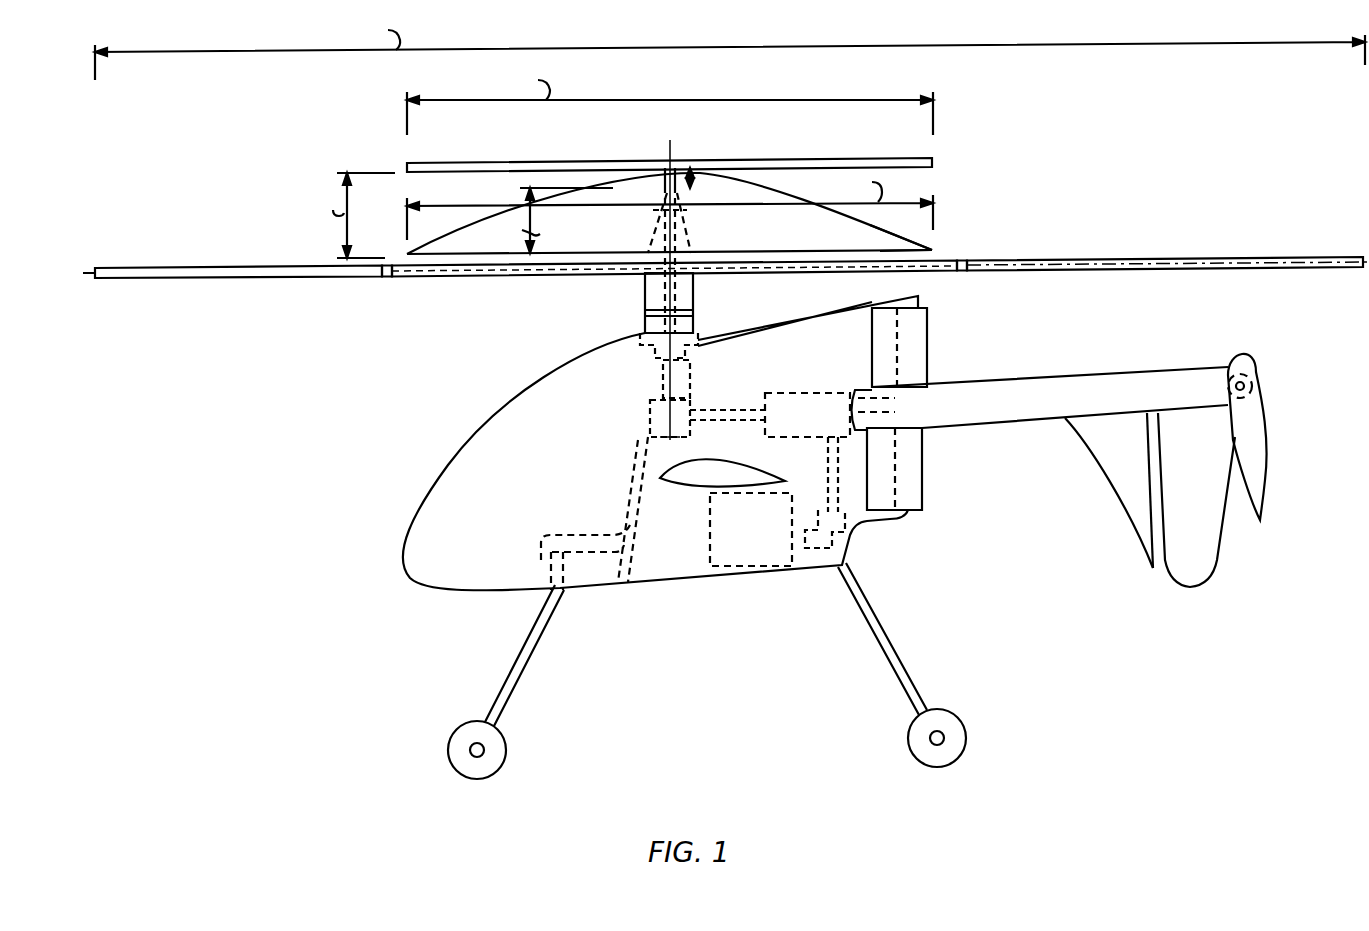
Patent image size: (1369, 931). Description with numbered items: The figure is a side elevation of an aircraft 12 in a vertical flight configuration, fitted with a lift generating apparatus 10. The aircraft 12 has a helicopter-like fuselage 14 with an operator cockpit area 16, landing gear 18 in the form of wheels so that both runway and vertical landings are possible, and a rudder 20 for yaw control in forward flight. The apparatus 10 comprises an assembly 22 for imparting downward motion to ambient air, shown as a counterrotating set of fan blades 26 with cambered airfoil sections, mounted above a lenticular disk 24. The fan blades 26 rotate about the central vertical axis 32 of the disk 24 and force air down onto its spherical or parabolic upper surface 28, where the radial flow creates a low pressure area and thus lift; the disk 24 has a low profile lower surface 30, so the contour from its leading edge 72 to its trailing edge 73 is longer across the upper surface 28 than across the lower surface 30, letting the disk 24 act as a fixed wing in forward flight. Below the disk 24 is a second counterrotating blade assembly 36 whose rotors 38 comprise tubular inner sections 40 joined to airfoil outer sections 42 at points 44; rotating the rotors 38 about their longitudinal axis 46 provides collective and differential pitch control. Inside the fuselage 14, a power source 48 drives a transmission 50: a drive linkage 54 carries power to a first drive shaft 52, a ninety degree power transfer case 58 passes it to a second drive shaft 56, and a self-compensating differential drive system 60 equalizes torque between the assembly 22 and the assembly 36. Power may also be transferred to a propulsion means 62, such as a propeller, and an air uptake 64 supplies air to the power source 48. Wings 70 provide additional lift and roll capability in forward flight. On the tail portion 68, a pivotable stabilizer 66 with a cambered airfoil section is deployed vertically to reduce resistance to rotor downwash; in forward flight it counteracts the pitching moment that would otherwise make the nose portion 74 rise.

The lift generating apparatus 10 is at (326, 378).
The aircraft 12 is at (346, 444).
The fuselage 14 is at (653, 590).
The operator cockpit area 16 is at (510, 497).
The landing gear 18 is at (486, 652).
The rudder 20 is at (1185, 588).
The assembly for imparting downward motion to ambient air 22 is at (725, 156).
The disk 24 is at (937, 246).
The fan blades 26 is at (470, 162).
The upper surface 28 is at (870, 224).
The lower surface 30 is at (470, 262).
The central vertical axis 32 is at (670, 158).
The second counterrotating blade assembly 36 is at (744, 272).
The rotors 38 is at (233, 250).
The inner sections 40 is at (883, 272).
The outer sections 42 is at (222, 280).
The points 44 is at (382, 278).
The longitudinal axis 46 is at (1238, 258).
The power source 48 is at (710, 522).
The transmission 50 is at (778, 370).
The first drive shaft 52 is at (828, 470).
The drive linkage 54 is at (722, 392).
The second drive shaft 56 is at (678, 372).
The 90° power transfer case 58 is at (650, 400).
The self-compensating differential drive system 60 is at (640, 348).
The propulsion means 62 is at (898, 357).
The air uptake 64 is at (818, 378).
The pivotable stabilizer 66 is at (1270, 458).
The tail portion 68 is at (1237, 348).
The wings 70 is at (704, 461).
The leading edge 72 is at (430, 234).
The trailing edge 73 is at (938, 251).
The nose portion 74 is at (386, 516).